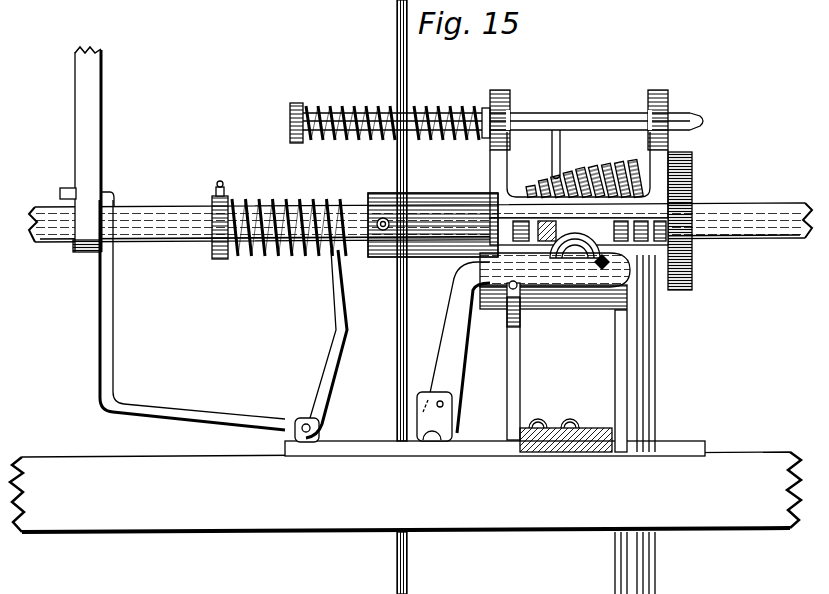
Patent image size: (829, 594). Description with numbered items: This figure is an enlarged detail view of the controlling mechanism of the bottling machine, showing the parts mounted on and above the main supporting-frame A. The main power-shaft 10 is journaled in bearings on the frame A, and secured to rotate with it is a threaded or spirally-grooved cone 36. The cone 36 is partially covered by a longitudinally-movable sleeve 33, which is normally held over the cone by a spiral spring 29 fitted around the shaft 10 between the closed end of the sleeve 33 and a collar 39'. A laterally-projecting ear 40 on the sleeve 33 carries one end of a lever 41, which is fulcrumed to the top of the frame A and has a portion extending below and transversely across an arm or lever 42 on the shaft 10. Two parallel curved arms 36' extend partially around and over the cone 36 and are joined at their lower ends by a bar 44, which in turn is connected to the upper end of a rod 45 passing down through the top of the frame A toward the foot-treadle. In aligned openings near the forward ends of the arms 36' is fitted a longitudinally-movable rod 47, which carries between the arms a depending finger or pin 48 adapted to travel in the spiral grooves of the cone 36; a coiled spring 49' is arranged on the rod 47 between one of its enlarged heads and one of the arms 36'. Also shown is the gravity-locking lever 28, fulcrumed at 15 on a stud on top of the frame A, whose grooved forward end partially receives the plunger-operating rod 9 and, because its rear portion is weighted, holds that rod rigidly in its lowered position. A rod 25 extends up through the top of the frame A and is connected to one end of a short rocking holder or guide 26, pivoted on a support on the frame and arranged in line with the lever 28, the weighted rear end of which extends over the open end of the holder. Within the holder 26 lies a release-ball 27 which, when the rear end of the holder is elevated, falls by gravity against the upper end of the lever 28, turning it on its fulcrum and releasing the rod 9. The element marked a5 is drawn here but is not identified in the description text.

The main supporting-frame A is at (405, 486).
The plunger-operating rod 9 is at (394, 297).
The main power-shaft 10 is at (420, 213).
The fulcrum 15 is at (434, 416).
The rod 25 is at (616, 355).
The rocking holder or guide 26 is at (590, 263).
The release-ball 27 is at (575, 246).
The gravity-locking lever 28 is at (460, 347).
The spiral spring 29 is at (298, 205).
The longitudinally-movable sleeve 33 is at (433, 222).
The threaded or spirally-grooved cone 36 is at (584, 170).
The parallel curved arms 36' is at (596, 109).
The collar 39' is at (219, 224).
The laterally-projecting ear 40 is at (383, 258).
The lever 41 is at (336, 310).
The arm or lever 42 is at (95, 134).
The bar 44 is at (579, 177).
The rod 45 is at (655, 424).
The longitudinally-movable rod 47 is at (356, 118).
The depending finger or pin 48 is at (561, 152).
The coiled spring 49' is at (452, 112).
The link arm a5 is at (522, 360).